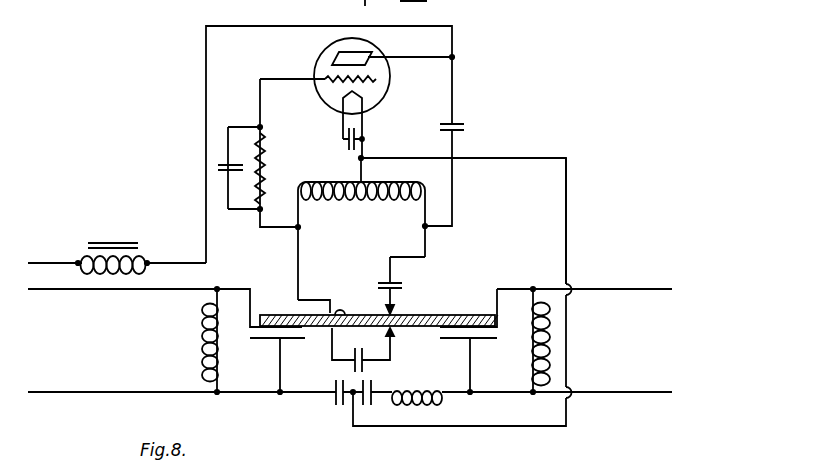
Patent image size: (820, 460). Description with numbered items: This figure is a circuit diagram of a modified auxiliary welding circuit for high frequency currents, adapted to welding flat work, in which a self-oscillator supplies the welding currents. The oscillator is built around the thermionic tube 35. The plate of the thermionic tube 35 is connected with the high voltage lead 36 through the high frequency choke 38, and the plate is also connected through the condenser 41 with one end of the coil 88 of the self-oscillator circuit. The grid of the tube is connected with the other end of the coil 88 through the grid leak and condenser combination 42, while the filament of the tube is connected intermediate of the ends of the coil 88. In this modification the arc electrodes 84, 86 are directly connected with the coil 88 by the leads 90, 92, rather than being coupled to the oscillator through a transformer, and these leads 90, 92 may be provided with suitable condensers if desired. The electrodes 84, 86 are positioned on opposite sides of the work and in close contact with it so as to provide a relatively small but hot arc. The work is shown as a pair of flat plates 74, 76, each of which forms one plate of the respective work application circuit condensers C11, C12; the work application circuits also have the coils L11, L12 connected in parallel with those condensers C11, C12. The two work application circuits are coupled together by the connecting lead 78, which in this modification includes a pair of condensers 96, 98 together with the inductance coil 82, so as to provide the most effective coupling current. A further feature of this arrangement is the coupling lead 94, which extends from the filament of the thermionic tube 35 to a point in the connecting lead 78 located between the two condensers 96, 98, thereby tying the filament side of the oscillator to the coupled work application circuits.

The thermionic tube 35 is at (374, 88).
The high voltage lead 36 is at (52, 247).
The high frequency choke 38 is at (113, 243).
The condenser 41 is at (461, 127).
The grid leak and condenser combination 42 is at (243, 142).
The flat plate 74 is at (467, 314).
The flat plate 76 is at (272, 313).
The connecting lead 78 is at (512, 396).
The inductance coil 82 is at (445, 408).
The arc electrode 84 is at (396, 308).
The arc electrode 86 is at (395, 330).
The coil 88 is at (388, 176).
The lead 90 is at (428, 242).
The lead 92 is at (303, 292).
The coupling lead 94 is at (570, 247).
The condenser 96 is at (340, 410).
The condenser 98 is at (378, 392).
The work application circuit condenser C11 is at (488, 343).
The work application circuit condenser C12 is at (265, 348).
The coil L11 is at (551, 337).
The coil L12 is at (205, 341).